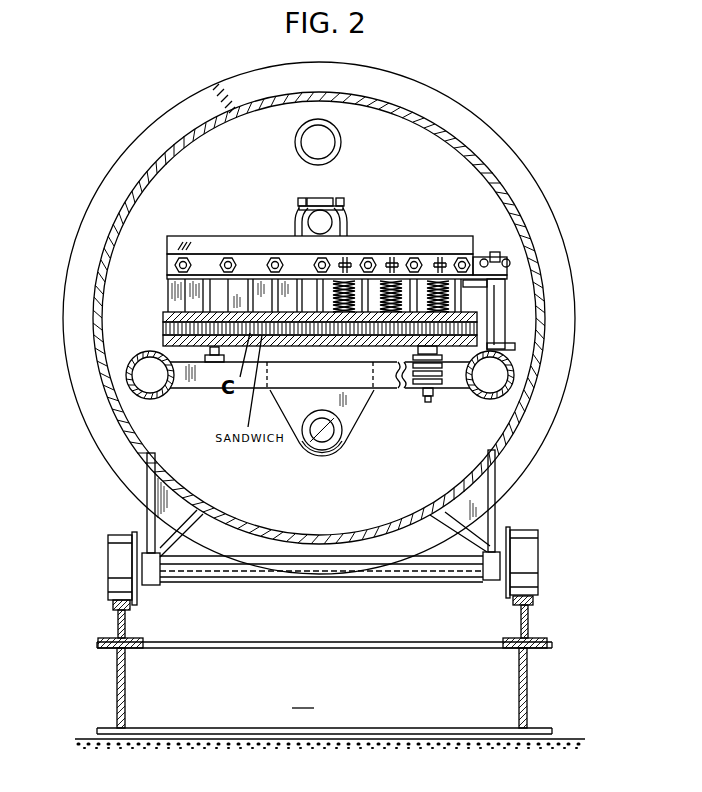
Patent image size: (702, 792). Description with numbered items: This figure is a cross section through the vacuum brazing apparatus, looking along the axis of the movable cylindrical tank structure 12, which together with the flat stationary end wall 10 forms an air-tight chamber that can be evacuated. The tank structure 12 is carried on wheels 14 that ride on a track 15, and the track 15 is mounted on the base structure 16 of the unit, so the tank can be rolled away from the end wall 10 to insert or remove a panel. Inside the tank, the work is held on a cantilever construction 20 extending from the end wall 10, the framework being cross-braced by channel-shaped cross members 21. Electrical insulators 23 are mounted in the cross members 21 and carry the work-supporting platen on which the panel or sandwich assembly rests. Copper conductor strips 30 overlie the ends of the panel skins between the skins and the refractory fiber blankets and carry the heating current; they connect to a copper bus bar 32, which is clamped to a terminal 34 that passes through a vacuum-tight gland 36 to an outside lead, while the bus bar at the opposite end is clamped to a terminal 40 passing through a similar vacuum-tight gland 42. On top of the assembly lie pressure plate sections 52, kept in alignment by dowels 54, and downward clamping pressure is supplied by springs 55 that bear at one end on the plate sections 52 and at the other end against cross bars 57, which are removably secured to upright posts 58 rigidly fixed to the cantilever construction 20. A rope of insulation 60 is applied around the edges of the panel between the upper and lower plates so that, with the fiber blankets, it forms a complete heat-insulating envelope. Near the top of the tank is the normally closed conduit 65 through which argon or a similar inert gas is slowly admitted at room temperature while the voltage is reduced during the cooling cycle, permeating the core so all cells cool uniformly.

The end wall 10 is at (527, 415).
The tank structure 12 is at (510, 197).
The wheels 14 is at (108, 555).
The track 15 is at (118, 604).
The base structure 16 is at (528, 690).
The cantilever construction 20 is at (129, 388).
The cross members 21 is at (407, 380).
The electrical insulators 23 is at (214, 362).
The conductor strips 30 is at (290, 284).
The copper bus bar 32 is at (218, 240).
The terminal 34 is at (315, 223).
The vacuum-tight gland 36 is at (348, 216).
The terminal 40 is at (319, 434).
The vacuum-tight gland 42 is at (342, 447).
The pressure plate sections 52 is at (480, 312).
The dowels 54 is at (316, 318).
The springs 55 is at (352, 282).
The cross bars 57 is at (410, 282).
The upright posts 58 is at (512, 343).
The rope of insulation 60 is at (165, 326).
The conduit 65 is at (335, 142).